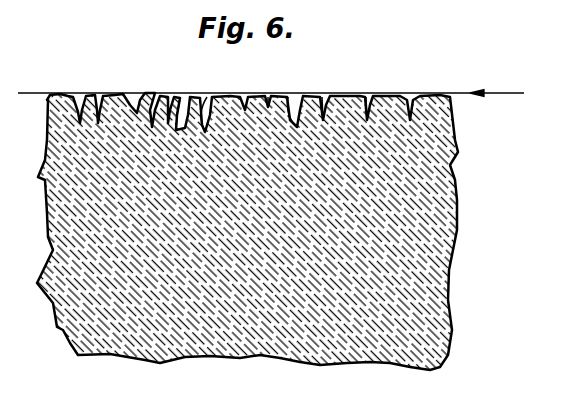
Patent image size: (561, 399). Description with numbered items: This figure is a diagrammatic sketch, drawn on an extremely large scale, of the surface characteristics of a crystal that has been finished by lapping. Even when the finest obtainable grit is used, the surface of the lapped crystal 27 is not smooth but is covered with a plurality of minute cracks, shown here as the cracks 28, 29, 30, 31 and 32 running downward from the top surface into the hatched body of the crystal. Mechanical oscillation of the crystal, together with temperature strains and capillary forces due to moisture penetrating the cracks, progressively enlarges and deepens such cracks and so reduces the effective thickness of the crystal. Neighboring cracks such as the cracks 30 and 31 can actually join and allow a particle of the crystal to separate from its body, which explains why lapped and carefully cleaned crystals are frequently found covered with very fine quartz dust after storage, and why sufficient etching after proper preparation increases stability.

The surface of the lapped crystal 27 is at (268, 97).
The crack 28 is at (180, 98).
The crack 29 is at (207, 97).
The crack 30 is at (288, 97).
The crack 31 is at (322, 97).
The crack 32 is at (366, 97).